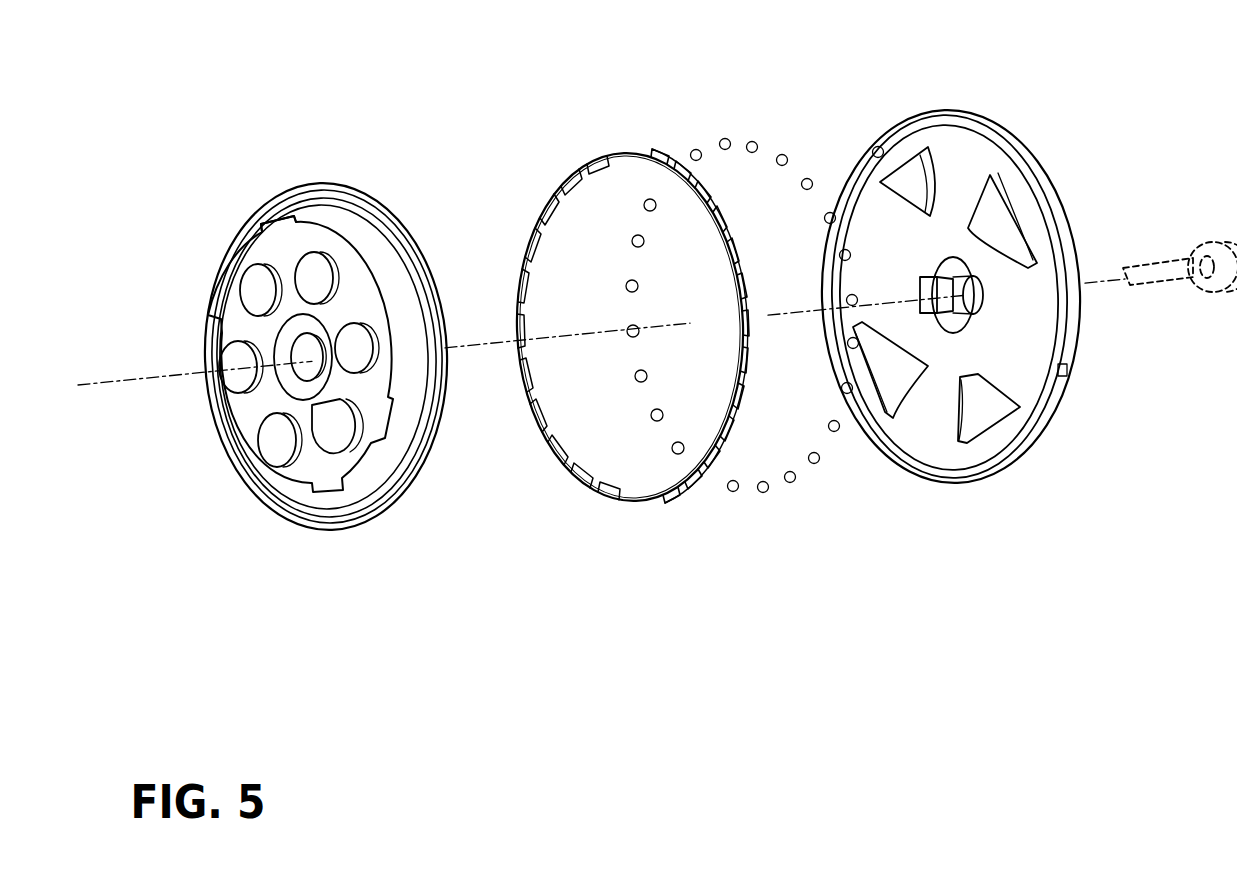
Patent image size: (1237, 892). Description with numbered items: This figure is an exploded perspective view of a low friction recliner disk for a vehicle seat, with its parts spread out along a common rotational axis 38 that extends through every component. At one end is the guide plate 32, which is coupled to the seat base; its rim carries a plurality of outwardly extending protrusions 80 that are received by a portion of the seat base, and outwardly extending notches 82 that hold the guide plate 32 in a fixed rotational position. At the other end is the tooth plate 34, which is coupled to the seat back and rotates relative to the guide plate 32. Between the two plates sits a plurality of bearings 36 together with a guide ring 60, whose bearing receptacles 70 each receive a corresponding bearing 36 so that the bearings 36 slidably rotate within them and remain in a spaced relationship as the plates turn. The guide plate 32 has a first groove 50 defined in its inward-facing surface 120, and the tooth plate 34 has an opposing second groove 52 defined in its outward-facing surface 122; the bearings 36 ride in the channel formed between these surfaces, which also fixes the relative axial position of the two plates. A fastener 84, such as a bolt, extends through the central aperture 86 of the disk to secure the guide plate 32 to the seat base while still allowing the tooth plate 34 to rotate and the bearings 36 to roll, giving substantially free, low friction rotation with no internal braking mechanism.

The guide plate 32 is at (942, 294).
The tooth plate 34 is at (291, 347).
The bearings 36 is at (696, 149).
The common rotational axis 38 is at (108, 381).
The first groove 50 is at (873, 149).
The second groove 52 is at (385, 210).
The guide ring 60 is at (630, 337).
The bearing receptacles 70 is at (708, 480).
The outwardly extending protrusions 80 is at (253, 292).
The outwardly extending notches 82 is at (273, 221).
The fastener 84 is at (1160, 262).
The central aperture 86 is at (308, 368).
The inward-facing surface 120 is at (912, 444).
The outward-facing surface 122 is at (405, 493).